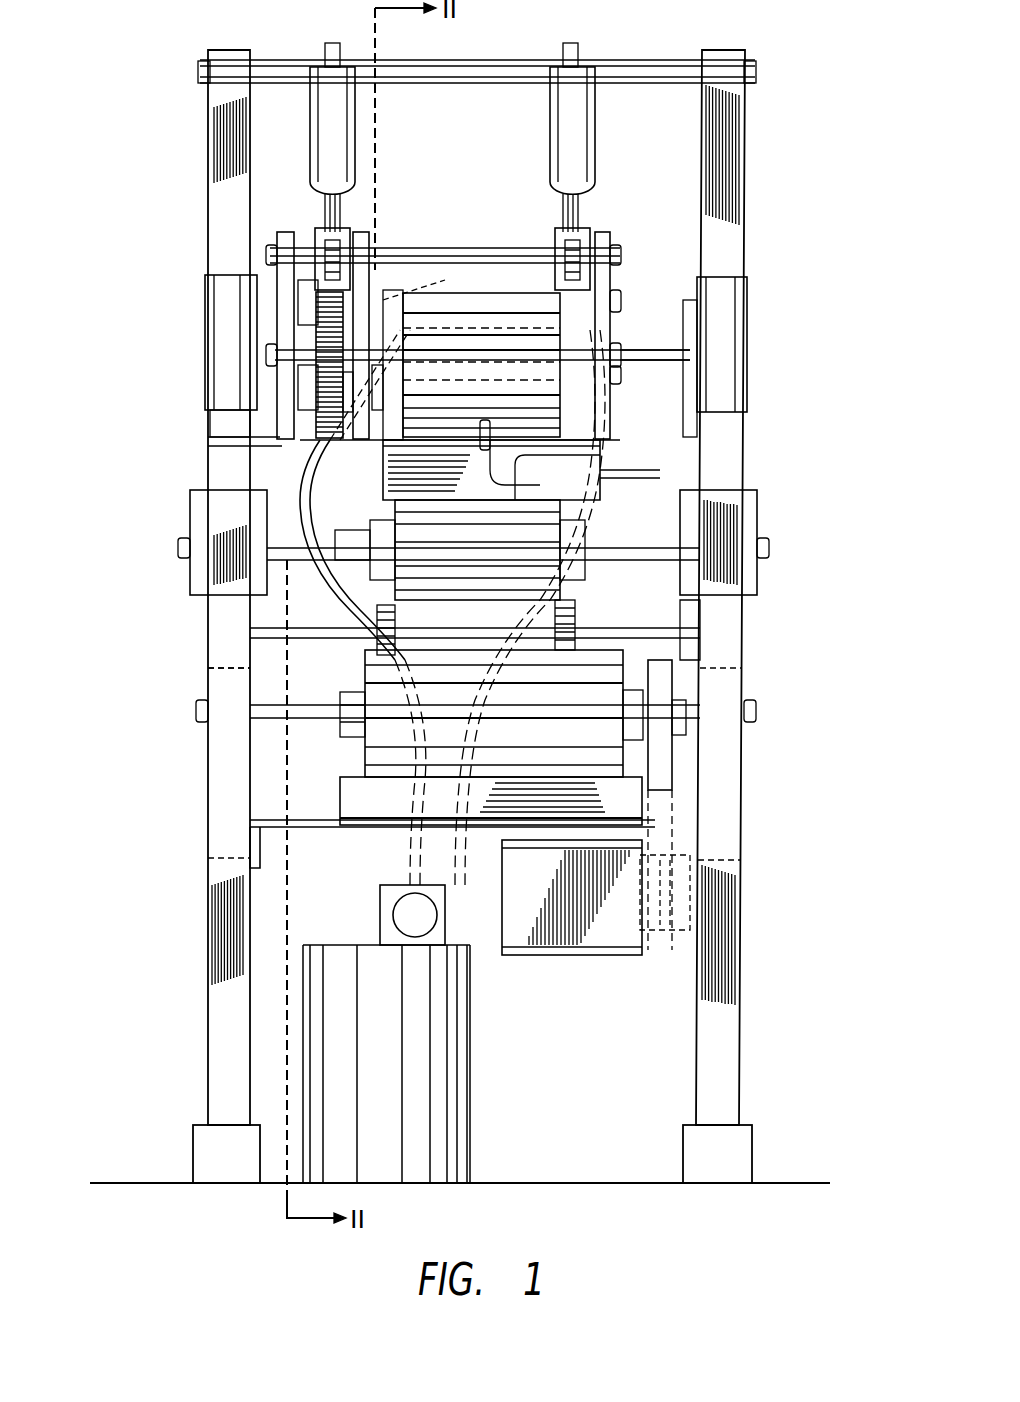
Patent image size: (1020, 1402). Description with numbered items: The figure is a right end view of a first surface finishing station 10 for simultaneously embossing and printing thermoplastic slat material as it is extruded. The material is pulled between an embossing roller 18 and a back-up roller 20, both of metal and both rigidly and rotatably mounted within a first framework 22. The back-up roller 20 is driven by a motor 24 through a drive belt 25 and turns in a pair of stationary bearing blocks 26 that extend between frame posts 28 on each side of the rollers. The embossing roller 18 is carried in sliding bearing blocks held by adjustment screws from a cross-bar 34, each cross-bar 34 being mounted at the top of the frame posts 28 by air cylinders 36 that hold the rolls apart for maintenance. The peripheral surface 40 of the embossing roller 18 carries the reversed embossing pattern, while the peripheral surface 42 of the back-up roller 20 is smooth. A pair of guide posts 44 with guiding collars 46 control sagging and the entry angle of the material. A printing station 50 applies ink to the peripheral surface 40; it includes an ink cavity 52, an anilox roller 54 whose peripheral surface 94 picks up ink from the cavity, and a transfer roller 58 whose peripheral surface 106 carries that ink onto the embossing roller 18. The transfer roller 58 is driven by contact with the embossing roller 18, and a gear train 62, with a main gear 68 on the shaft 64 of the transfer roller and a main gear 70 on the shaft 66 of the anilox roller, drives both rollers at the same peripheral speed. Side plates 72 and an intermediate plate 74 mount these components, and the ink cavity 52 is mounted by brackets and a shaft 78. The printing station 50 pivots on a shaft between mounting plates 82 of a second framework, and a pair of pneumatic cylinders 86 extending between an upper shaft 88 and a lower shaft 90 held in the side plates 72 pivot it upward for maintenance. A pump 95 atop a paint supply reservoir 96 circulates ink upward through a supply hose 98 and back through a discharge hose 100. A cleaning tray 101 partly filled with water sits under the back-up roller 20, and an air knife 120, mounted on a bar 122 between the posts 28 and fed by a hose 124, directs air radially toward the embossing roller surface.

The first surface finishing station 10 is at (178, 772).
The embossing roller 18 is at (330, 600).
The back-up roller 20 is at (366, 761).
The first framework 22 is at (738, 1032).
The motor 24 is at (587, 950).
The drive belt 25 is at (665, 822).
The stationary bearing blocks 26 is at (228, 668).
The frame posts 28 is at (740, 980).
The cross-bar 34 is at (250, 420).
The air cylinders 36 is at (206, 357).
The peripheral surface of the embossing roller 40 is at (270, 580).
The peripheral surface of the back-up roller 42 is at (560, 738).
The guide posts 44 is at (655, 660).
The guiding collars 46 is at (388, 673).
The printing station 50 is at (632, 268).
The ink cavity 52 is at (470, 330).
The anilox roller 54 is at (436, 300).
The transfer roller 58 is at (567, 430).
The gear train 62 is at (300, 466).
The shaft 64 is at (300, 393).
The shaft 66 is at (300, 300).
The main gear 68 is at (298, 415).
The main gear 70 is at (310, 335).
The side plates 72 is at (290, 227).
The intermediate plate 74 is at (362, 250).
The shaft 78 is at (620, 385).
The mounting plates 82 is at (662, 352).
The pneumatic cylinders 86 is at (354, 120).
The upper shaft 88 is at (206, 72).
The lower shaft 90 is at (266, 256).
The peripheral surface of the anilox roller 94 is at (518, 300).
The pump 95 is at (382, 935).
The paint supply reservoir 96 is at (472, 1055).
The supply hose 98 is at (342, 620).
The discharge hose 100 is at (640, 596).
The cleaning tray 101 is at (338, 797).
The peripheral surface of the transfer roller 106 is at (565, 462).
The air knife 120 is at (580, 483).
The bar 122 is at (290, 488).
The hose 124 is at (540, 512).